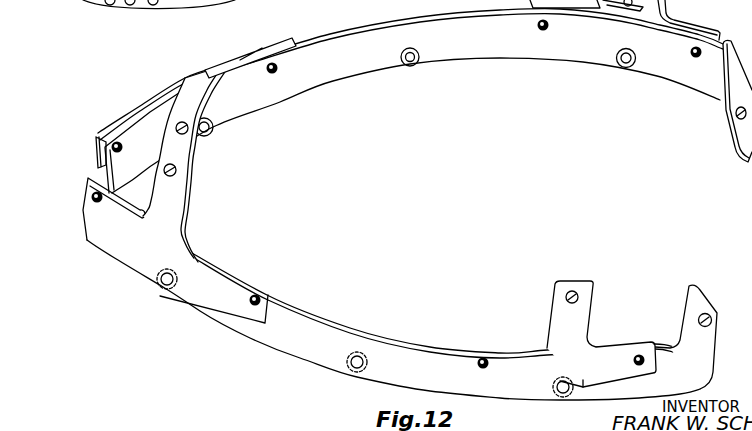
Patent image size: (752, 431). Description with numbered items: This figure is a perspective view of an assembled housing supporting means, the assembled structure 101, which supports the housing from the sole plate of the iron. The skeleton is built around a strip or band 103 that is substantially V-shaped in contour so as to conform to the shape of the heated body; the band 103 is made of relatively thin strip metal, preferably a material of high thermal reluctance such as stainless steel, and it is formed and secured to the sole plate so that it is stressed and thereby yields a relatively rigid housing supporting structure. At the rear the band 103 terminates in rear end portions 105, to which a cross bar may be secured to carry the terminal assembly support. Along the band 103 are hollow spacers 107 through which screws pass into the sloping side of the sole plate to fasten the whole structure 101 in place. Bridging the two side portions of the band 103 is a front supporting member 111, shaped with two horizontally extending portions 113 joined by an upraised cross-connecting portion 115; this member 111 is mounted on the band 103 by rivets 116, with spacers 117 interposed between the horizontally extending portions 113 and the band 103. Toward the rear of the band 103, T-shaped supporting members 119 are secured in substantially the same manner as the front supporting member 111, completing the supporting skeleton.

The assembled structure 101 is at (128, 312).
The strip or band 103 is at (466, 57).
The rear end portions 105 is at (722, 113).
The spacers 107 is at (415, 65).
The front supporting member 111 is at (185, 78).
The horizontally extending portions 113 is at (234, 55).
The upraised cross-connecting portion 115 is at (195, 160).
The rivets 116 is at (275, 75).
The spacers 117 is at (97, 147).
The T-shaped supporting members 119 is at (678, 18).